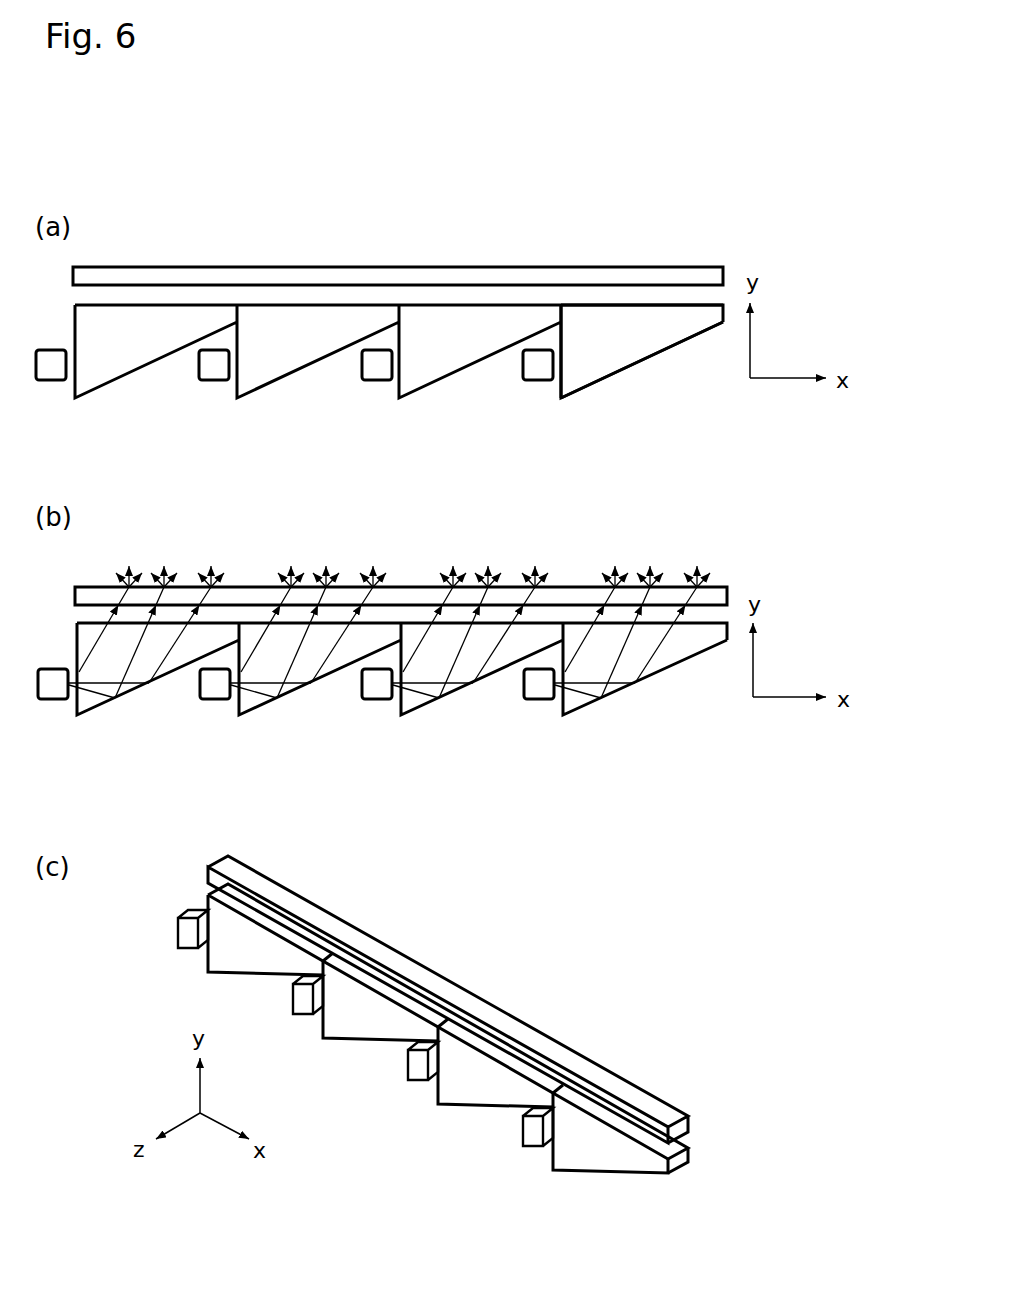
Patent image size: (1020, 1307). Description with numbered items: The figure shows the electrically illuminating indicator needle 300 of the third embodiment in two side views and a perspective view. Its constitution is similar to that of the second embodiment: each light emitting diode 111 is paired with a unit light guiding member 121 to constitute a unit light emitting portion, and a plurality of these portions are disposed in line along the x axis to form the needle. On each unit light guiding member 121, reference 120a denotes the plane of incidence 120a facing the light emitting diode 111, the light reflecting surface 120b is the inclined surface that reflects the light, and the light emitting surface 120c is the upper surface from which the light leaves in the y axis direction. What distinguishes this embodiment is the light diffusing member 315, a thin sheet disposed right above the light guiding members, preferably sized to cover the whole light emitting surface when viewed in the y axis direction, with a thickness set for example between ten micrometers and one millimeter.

The electrically illuminating indicator needle 300 is at (410, 665).
The light diffusing member 315 is at (472, 276).
The light emitting diode 111 is at (48, 381).
The unit light guiding member 121 is at (409, 342).
The plane of incidence 120a is at (574, 360).
The light reflecting surface 120b is at (615, 361).
The light emitting surface 120c is at (607, 310).